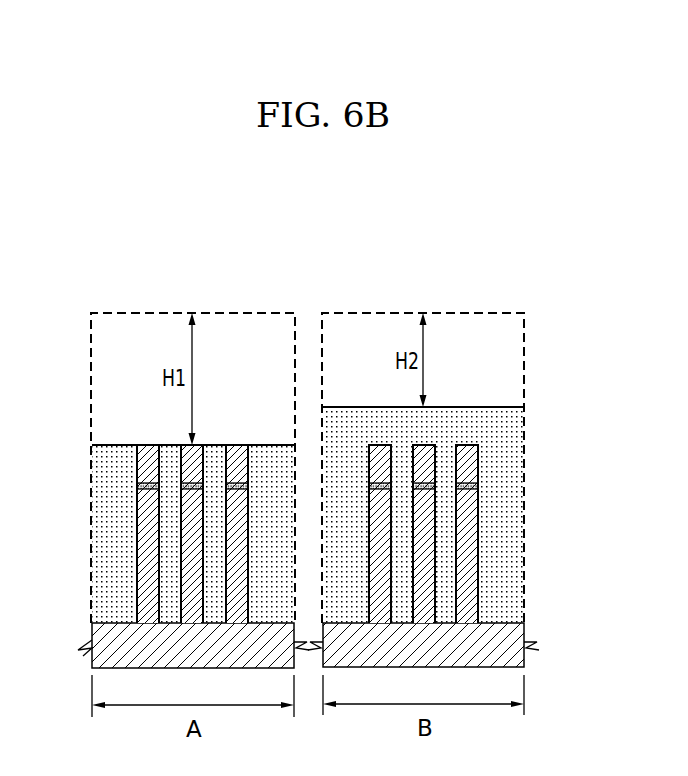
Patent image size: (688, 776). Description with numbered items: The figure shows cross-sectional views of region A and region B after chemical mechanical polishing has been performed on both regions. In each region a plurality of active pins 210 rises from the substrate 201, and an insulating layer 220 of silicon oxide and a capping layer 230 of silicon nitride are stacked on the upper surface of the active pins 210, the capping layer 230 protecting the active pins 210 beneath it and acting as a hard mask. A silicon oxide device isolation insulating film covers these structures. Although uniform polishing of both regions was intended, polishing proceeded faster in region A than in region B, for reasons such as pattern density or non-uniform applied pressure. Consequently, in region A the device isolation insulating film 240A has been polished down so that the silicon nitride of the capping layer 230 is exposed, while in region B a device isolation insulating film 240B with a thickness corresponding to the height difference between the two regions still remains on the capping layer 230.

The substrate 201 is at (92, 634).
The active pins 210 is at (115, 568).
The insulating layer 220 is at (137, 486).
The capping layer 230 is at (137, 461).
The device isolation insulating film 240A is at (98, 523).
The device isolation insulating film 240B is at (510, 432).